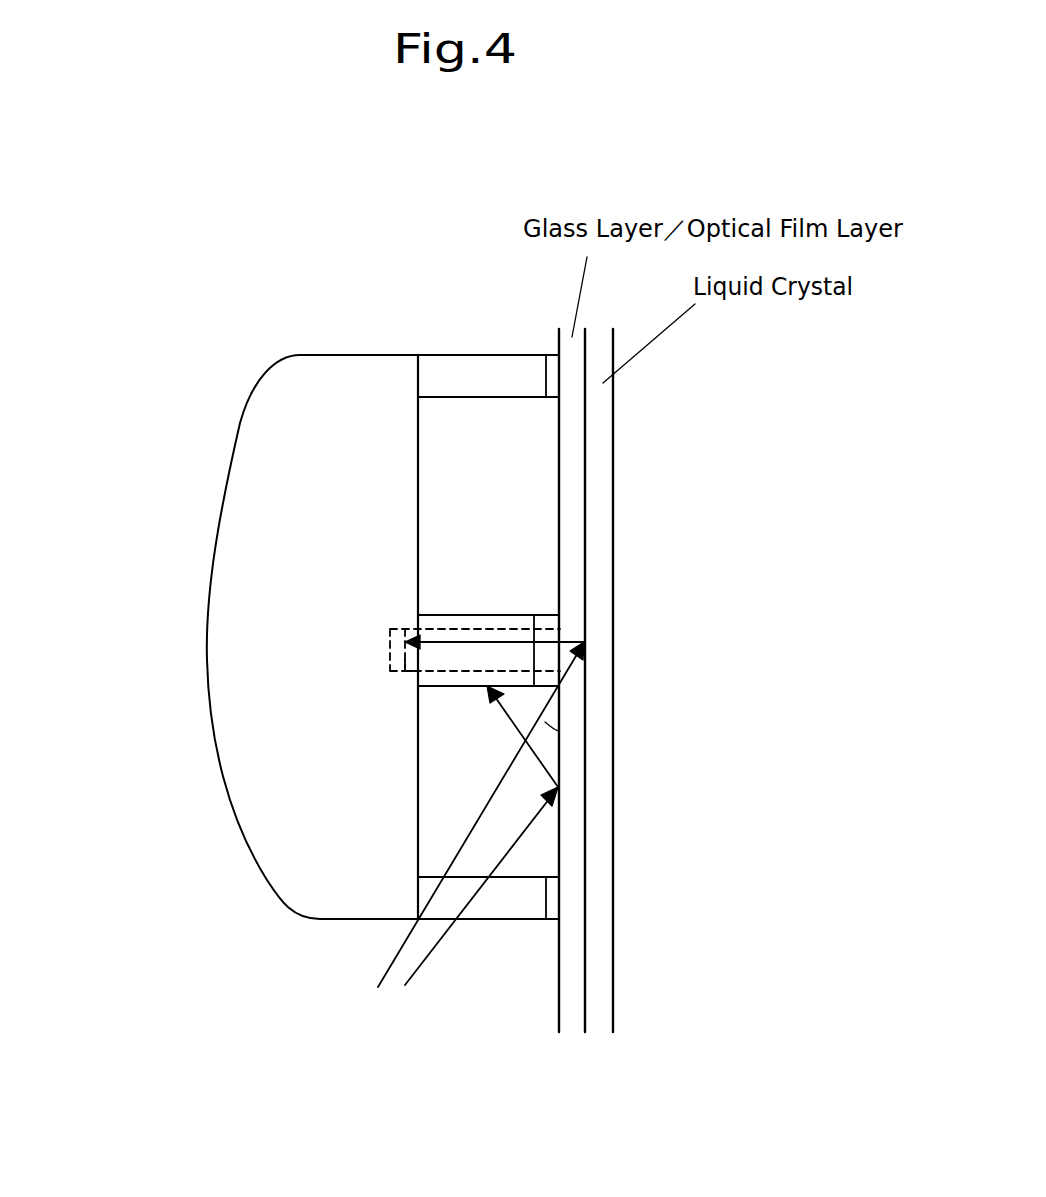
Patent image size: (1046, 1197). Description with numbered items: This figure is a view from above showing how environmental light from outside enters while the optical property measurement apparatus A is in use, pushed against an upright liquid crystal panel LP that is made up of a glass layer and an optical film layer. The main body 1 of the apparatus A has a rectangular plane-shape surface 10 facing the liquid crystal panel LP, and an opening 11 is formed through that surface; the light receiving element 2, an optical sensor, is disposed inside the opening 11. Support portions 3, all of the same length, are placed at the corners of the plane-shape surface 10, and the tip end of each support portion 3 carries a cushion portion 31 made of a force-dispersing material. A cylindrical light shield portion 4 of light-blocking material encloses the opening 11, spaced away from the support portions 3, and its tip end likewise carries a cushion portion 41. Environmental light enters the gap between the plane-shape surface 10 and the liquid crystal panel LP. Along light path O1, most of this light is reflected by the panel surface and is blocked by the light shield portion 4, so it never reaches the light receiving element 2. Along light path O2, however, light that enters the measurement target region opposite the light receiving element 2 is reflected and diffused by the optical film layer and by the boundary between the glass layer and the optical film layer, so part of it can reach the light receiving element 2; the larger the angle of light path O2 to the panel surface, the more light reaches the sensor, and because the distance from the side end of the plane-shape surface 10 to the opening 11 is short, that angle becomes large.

The optical property measurement apparatus A is at (279, 606).
The main body 1 is at (243, 523).
The plane-shape surface 10 is at (422, 500).
The opening 11 is at (410, 672).
The light receiving element 2 is at (390, 650).
The support portion 3 is at (452, 372).
The cushion portion 31 is at (552, 372).
The light shield portion 4 is at (468, 618).
The cushion portion 41 is at (543, 620).
The liquid crystal panel LP is at (572, 496).
The light path O1 is at (430, 952).
The light path O2 is at (392, 963).